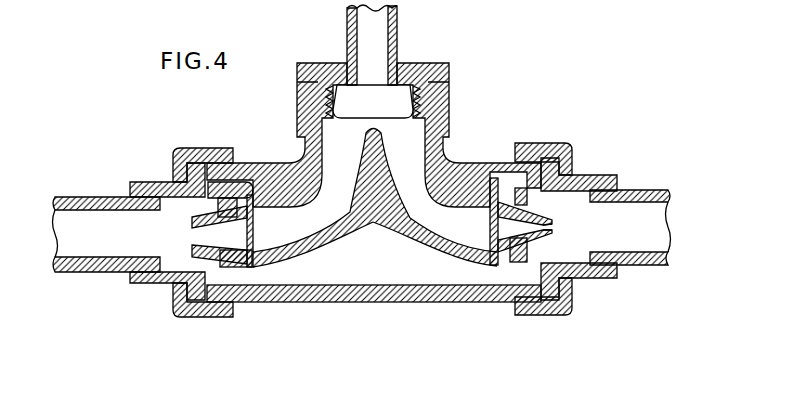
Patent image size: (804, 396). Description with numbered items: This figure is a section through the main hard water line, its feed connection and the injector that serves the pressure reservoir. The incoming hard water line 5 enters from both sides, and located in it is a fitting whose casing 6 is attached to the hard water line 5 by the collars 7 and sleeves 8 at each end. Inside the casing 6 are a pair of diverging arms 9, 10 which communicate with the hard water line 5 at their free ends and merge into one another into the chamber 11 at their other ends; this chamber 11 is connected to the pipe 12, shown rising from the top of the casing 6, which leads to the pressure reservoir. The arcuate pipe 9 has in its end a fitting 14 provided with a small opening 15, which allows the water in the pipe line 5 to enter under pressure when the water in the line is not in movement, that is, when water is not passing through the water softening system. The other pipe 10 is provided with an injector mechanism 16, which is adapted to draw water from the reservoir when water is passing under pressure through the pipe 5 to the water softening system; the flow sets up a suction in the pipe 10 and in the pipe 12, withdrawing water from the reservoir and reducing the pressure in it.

The incoming hard water line 5 is at (73, 197).
The casing 6 is at (410, 293).
The collars 7 is at (191, 148).
The sleeves 8 is at (145, 182).
The arcuate pipe 9 is at (414, 227).
The pipe 10 is at (331, 231).
The chamber 11 is at (378, 115).
The pipe 12 is at (400, 35).
The fitting 14 is at (547, 215).
The small opening 15 is at (553, 228).
The injector mechanism 16 is at (194, 245).